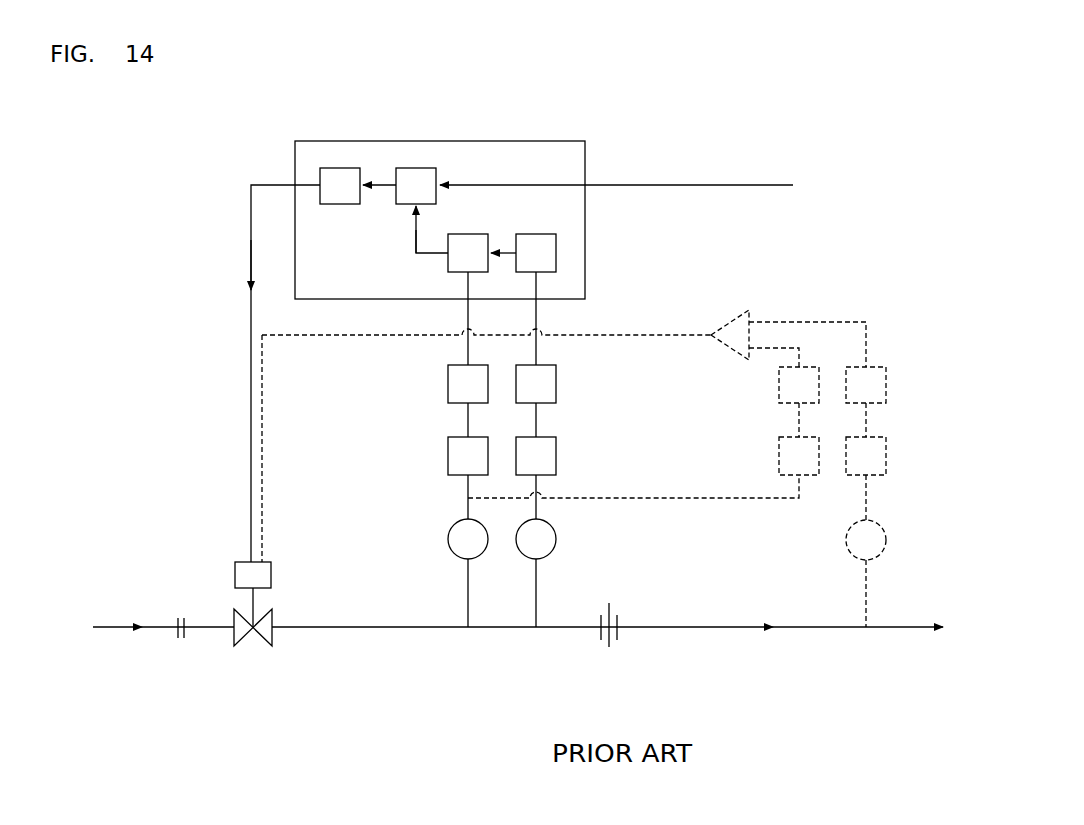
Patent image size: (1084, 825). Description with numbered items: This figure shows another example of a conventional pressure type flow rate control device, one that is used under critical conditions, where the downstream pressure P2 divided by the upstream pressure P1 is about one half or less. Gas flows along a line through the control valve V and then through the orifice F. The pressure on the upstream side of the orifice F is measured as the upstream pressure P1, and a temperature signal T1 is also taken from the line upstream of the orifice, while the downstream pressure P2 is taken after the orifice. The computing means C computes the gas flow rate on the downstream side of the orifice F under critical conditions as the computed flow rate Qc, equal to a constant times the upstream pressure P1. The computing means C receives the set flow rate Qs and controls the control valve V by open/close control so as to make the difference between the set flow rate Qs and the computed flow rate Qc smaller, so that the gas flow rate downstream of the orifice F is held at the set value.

The computing means C is at (532, 140).
The set flow rate Qs is at (716, 184).
The computed flow rate Qc is at (414, 213).
The upstream pressure P1 is at (468, 462).
The temperature sensor T1 is at (536, 462).
The downstream pressure P2 is at (866, 551).
The control valve V is at (218, 608).
The orifice F is at (609, 645).